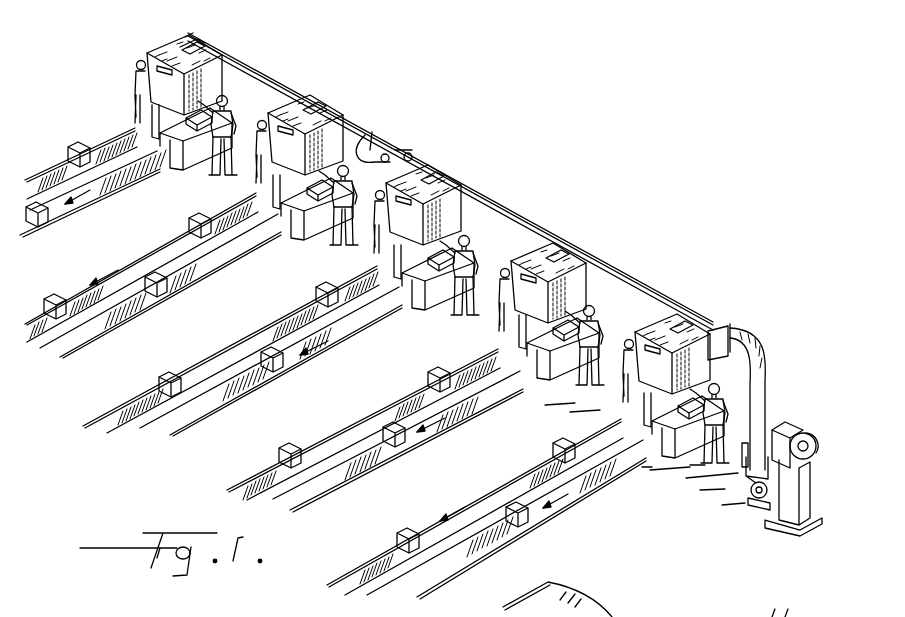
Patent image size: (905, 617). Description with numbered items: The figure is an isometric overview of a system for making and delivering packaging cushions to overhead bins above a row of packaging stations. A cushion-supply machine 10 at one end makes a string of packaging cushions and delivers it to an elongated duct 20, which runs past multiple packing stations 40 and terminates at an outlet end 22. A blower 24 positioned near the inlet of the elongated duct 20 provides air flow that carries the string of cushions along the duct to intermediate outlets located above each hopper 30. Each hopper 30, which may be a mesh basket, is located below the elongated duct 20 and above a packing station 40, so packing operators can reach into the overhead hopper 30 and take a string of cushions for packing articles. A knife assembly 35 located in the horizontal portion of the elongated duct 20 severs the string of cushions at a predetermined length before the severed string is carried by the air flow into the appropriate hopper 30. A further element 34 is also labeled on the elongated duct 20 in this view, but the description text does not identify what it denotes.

The cushion-supply machine 10 is at (800, 418).
The elongated duct 20 is at (540, 218).
The outlet end 22 is at (186, 52).
The blower 24 is at (748, 485).
The hopper 30 is at (152, 80).
The trolley 34 is at (368, 160).
The knife assembly 35 is at (740, 331).
The packing station 40 is at (128, 104).